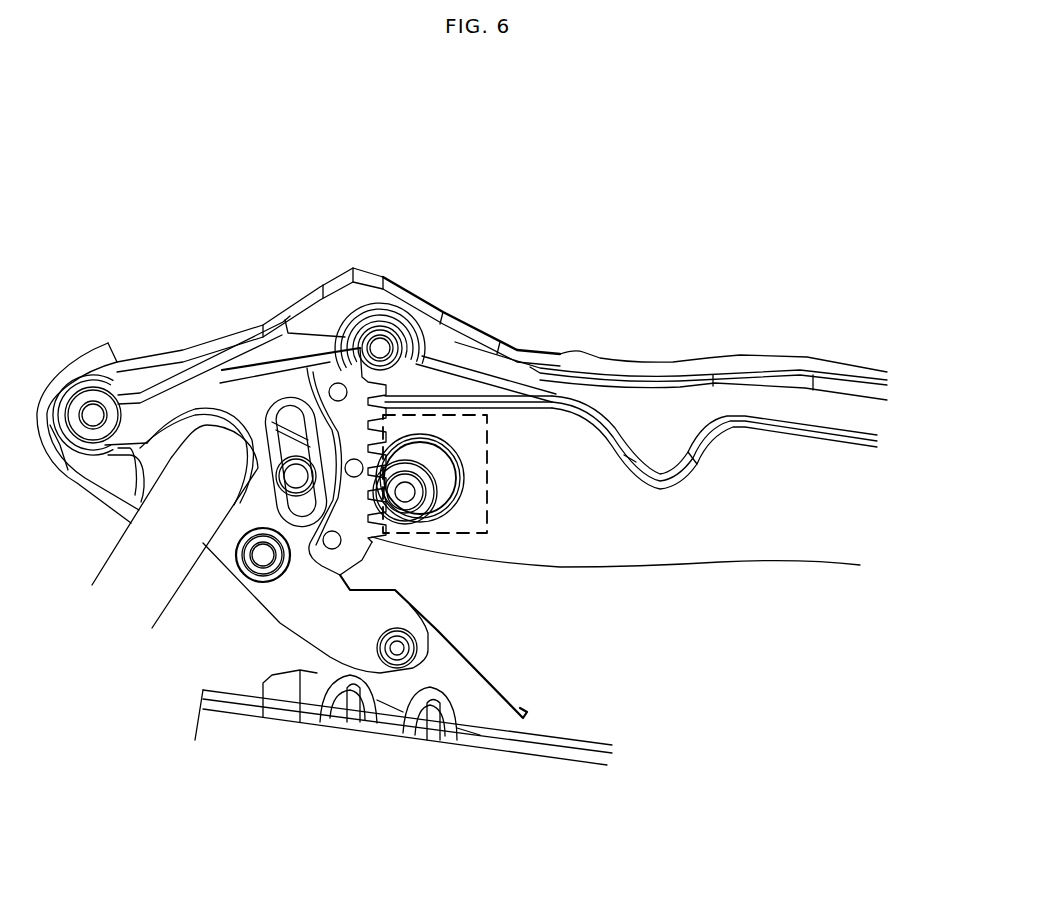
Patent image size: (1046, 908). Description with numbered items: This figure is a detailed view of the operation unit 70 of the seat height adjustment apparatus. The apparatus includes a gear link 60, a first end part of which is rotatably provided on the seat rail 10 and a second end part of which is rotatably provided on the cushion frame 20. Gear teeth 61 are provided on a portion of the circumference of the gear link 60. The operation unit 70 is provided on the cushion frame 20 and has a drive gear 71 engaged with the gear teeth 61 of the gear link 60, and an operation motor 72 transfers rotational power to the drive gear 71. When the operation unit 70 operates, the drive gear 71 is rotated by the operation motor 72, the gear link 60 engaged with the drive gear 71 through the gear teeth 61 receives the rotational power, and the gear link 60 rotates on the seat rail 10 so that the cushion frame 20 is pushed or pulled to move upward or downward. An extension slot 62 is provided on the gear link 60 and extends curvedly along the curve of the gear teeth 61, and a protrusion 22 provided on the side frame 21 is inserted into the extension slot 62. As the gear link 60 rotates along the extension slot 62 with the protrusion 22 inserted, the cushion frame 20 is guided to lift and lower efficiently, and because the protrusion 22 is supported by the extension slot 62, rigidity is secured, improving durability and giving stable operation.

The seat rail 10 is at (565, 753).
The cushion frame 20 is at (785, 605).
The side frame 21 is at (703, 535).
The protrusion 22 is at (295, 477).
The gear link 60 is at (306, 343).
The gear teeth 61 is at (413, 407).
The extension slot 62 is at (243, 565).
The operation unit 70 is at (557, 342).
The drive gear 71 is at (420, 455).
The operation motor 72 is at (473, 462).